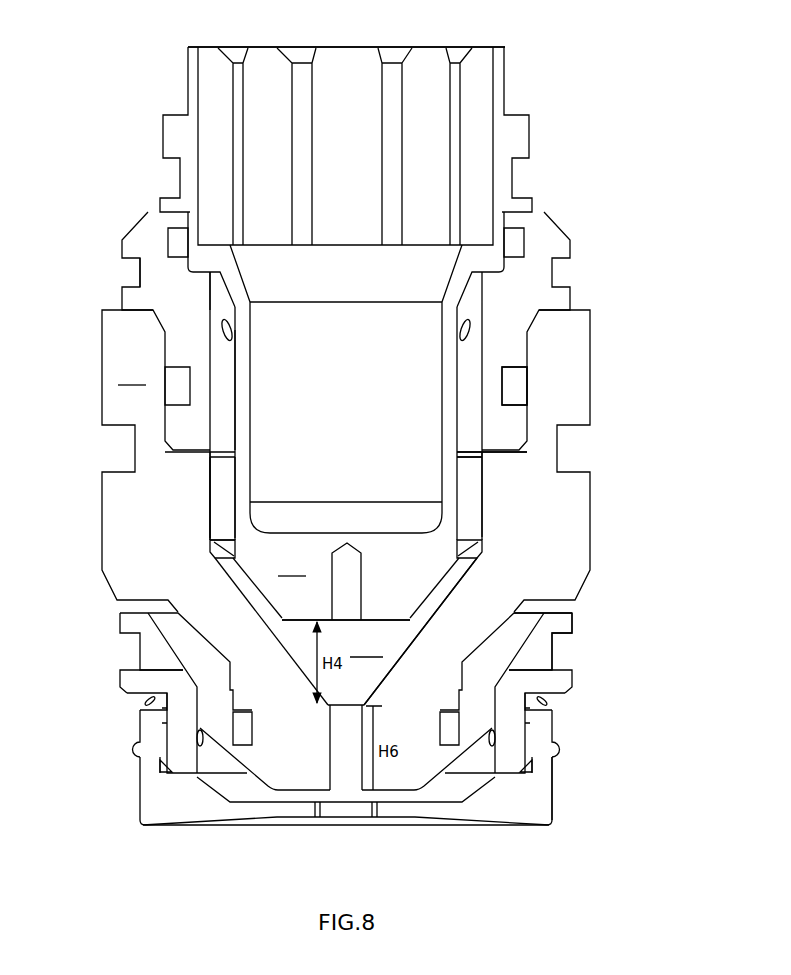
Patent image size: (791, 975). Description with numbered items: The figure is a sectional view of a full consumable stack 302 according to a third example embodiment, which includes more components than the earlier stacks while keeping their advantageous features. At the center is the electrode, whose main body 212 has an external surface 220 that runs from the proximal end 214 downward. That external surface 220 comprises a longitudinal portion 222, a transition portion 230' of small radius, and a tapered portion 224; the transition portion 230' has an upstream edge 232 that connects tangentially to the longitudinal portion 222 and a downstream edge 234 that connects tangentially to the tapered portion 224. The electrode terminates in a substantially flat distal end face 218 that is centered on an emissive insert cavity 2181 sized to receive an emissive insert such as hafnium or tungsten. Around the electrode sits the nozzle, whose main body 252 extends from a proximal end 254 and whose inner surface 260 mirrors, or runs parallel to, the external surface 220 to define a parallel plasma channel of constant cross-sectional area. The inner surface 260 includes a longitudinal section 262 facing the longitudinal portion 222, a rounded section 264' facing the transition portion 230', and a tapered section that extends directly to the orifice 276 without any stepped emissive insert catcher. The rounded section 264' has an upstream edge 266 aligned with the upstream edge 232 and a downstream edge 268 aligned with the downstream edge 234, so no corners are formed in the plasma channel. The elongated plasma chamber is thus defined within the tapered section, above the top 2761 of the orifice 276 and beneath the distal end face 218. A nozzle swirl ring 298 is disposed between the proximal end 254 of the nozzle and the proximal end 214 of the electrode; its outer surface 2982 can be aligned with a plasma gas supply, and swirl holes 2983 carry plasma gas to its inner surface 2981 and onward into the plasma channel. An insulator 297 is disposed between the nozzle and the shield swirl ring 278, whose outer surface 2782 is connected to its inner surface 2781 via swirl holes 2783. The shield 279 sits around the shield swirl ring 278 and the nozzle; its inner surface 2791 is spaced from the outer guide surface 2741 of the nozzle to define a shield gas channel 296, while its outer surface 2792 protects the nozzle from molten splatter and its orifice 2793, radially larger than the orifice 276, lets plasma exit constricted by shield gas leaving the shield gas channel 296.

The consumable stack 302 is at (694, 154).
The proximal end 214 is at (187, 62).
The nozzle swirl ring 298 is at (136, 221).
The outer surface 2982 is at (131, 272).
The inner surface 2981 is at (207, 291).
The swirl holes 2983 is at (218, 333).
The main body 252 is at (168, 461).
The proximal end 254 is at (595, 333).
The external surface 220 is at (465, 374).
The longitudinal section 262 is at (208, 480).
The inner surface 260 is at (216, 496).
The longitudinal portion 222 is at (463, 483).
The upstream edge 266 is at (491, 532).
The upstream edge 232 is at (229, 534).
The downstream edge 234 is at (226, 562).
The rounded section 264' is at (138, 542).
The transition portion 230' is at (555, 535).
The downstream edge 268 is at (483, 560).
The tapered portion 224 is at (445, 583).
The insulator 297 is at (541, 634).
The main body 212 is at (346, 439).
The emissive insert cavity 2181 is at (351, 572).
The distal end face 218 is at (295, 625).
The orifice 276 is at (341, 766).
The outer guide surface 2741 is at (455, 790).
The inner surface 2791 is at (230, 791).
The outer surface 2792 is at (189, 831).
The orifice 2793 is at (351, 816).
The shield 279 is at (551, 777).
The shield gas channel 296 is at (481, 761).
The inner surface 2781 is at (195, 765).
The top 2761 is at (196, 733).
The swirl holes 2783 is at (181, 742).
The outer surface 2782 is at (117, 683).
The shield swirl ring 278 is at (550, 682).